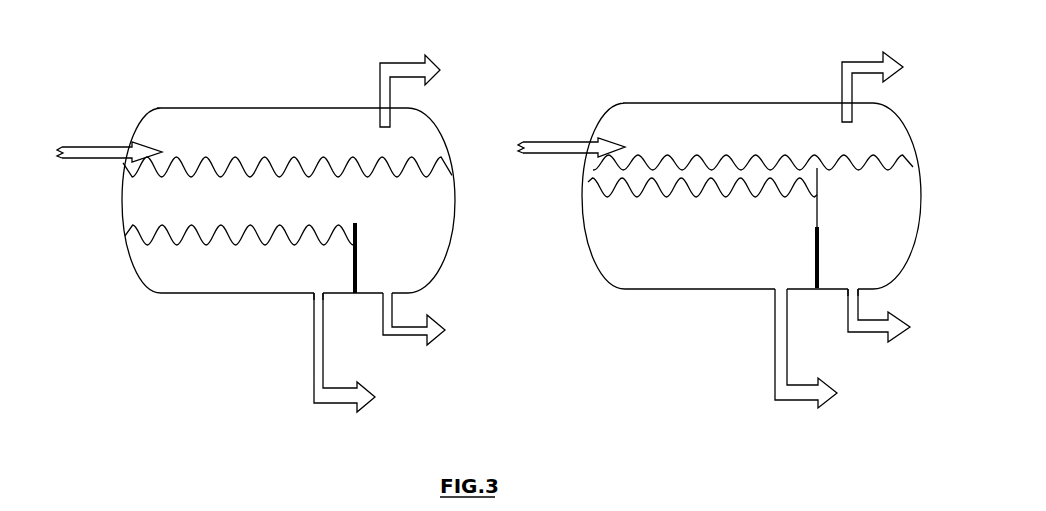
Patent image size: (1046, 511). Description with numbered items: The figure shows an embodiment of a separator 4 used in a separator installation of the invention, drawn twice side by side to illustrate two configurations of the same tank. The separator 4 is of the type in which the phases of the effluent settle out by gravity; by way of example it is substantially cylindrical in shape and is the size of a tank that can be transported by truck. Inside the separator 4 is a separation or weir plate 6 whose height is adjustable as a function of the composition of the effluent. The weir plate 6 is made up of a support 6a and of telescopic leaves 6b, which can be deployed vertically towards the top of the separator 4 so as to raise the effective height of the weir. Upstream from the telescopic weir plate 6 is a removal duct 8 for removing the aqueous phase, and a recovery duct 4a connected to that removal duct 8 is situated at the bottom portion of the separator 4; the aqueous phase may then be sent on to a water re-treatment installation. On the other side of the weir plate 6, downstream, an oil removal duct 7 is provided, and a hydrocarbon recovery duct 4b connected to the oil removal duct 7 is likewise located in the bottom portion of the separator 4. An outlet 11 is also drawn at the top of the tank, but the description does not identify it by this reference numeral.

The separator 4 is at (159, 99).
The overhead vapor outlet 11 is at (369, 71).
The recovery duct 4a is at (301, 298).
The weir plate 6 is at (376, 270).
The oil removal duct 7 is at (451, 340).
The removal duct 8 is at (301, 362).
The telescopic leaves 6b is at (877, 208).
The support 6a is at (817, 299).
The hydrocarbon recovery duct 4b is at (866, 290).